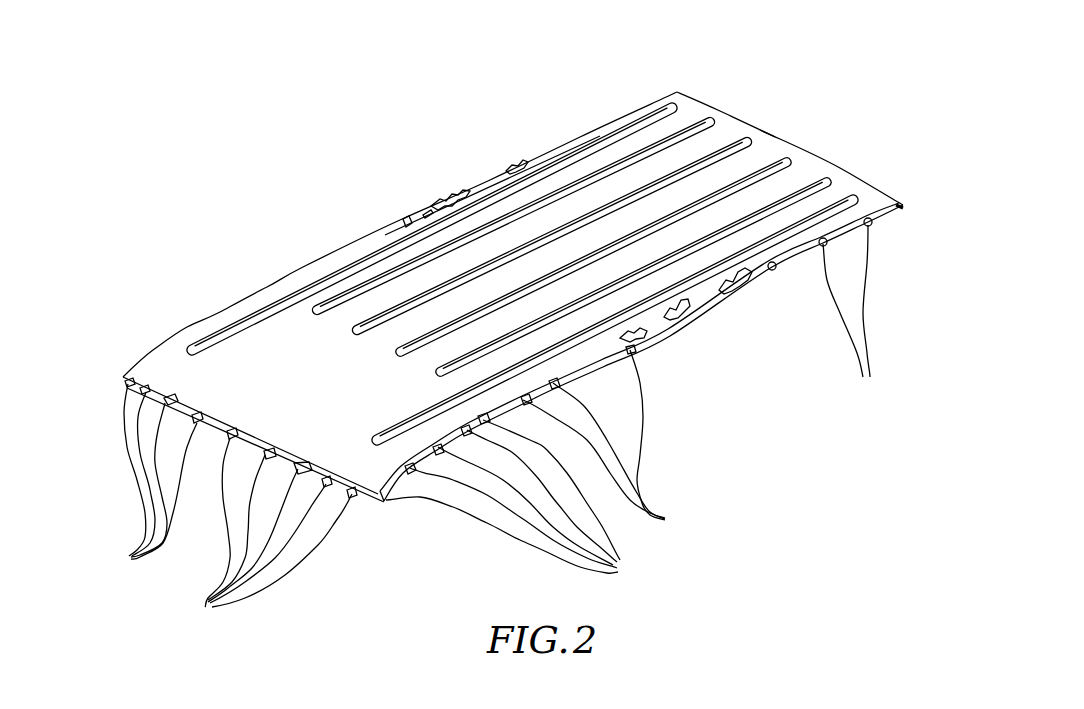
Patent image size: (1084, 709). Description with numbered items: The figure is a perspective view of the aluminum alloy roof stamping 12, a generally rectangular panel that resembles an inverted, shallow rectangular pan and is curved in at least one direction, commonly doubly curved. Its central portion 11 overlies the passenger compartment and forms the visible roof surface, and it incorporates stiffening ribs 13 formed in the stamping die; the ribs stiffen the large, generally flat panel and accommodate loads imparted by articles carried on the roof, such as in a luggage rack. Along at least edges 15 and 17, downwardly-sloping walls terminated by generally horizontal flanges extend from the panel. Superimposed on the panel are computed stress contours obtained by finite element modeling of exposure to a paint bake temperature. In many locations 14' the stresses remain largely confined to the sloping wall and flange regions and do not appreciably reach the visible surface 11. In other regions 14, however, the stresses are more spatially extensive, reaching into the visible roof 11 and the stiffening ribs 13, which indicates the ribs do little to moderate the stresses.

The central portion 11 is at (648, 207).
The roof stamping 12 is at (767, 150).
The stiffening ribs 13 is at (592, 180).
The regions of spatially extensive stress 14 is at (498, 292).
The locations of confined stress 14' is at (492, 418).
The edge 15 is at (303, 267).
The edge 17 is at (900, 208).